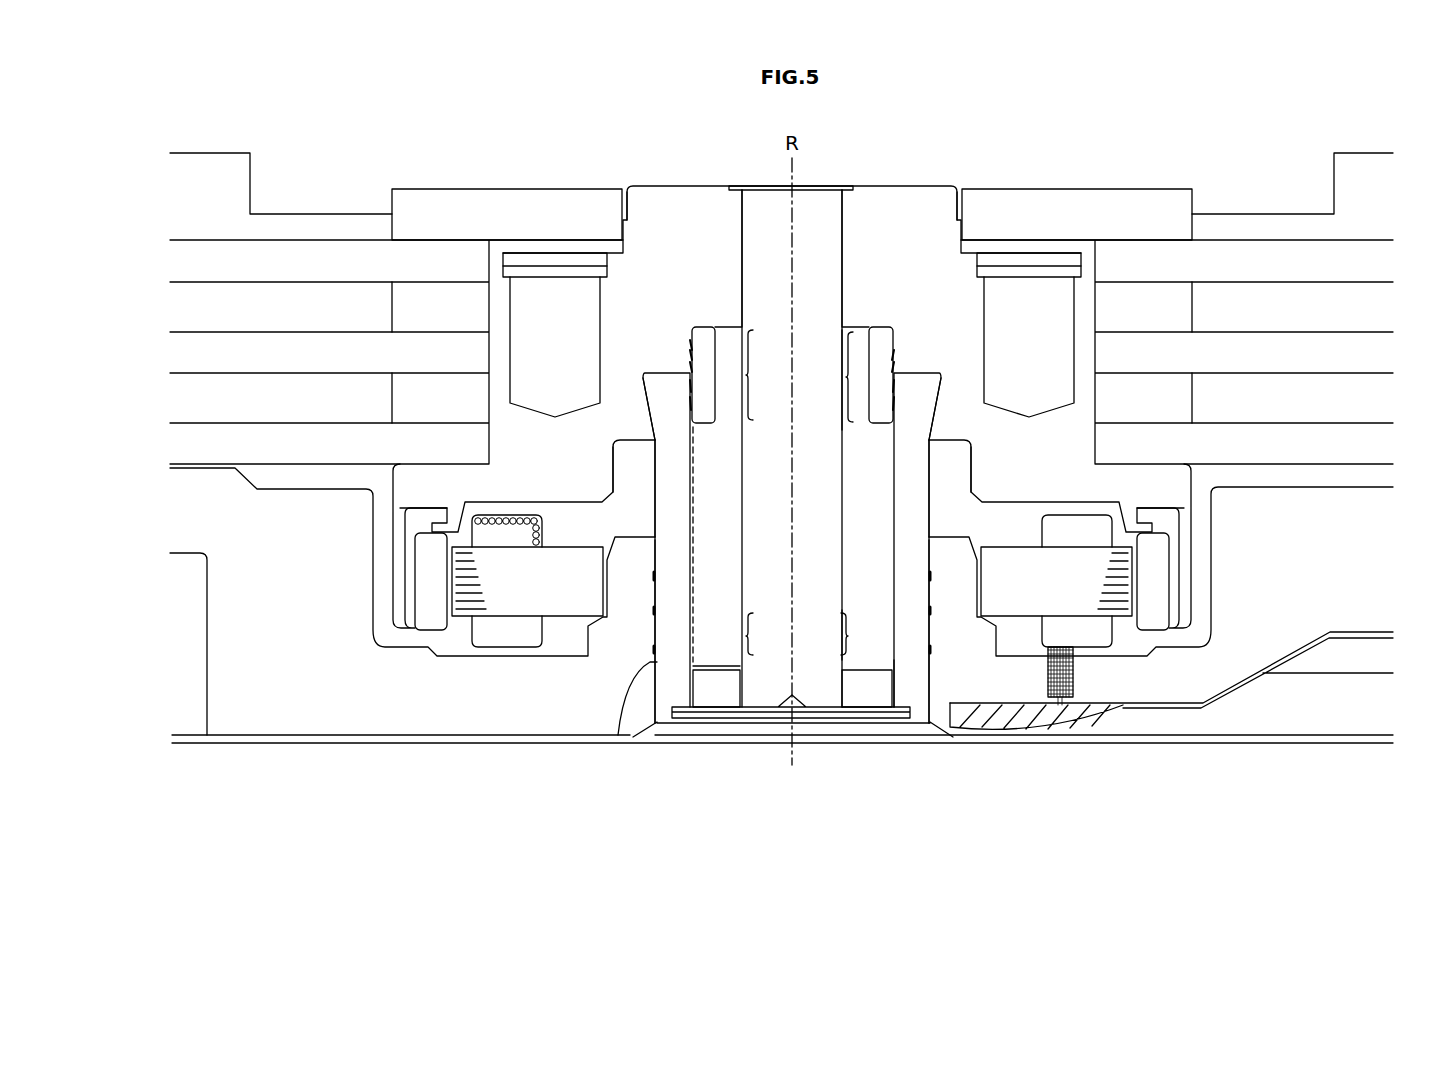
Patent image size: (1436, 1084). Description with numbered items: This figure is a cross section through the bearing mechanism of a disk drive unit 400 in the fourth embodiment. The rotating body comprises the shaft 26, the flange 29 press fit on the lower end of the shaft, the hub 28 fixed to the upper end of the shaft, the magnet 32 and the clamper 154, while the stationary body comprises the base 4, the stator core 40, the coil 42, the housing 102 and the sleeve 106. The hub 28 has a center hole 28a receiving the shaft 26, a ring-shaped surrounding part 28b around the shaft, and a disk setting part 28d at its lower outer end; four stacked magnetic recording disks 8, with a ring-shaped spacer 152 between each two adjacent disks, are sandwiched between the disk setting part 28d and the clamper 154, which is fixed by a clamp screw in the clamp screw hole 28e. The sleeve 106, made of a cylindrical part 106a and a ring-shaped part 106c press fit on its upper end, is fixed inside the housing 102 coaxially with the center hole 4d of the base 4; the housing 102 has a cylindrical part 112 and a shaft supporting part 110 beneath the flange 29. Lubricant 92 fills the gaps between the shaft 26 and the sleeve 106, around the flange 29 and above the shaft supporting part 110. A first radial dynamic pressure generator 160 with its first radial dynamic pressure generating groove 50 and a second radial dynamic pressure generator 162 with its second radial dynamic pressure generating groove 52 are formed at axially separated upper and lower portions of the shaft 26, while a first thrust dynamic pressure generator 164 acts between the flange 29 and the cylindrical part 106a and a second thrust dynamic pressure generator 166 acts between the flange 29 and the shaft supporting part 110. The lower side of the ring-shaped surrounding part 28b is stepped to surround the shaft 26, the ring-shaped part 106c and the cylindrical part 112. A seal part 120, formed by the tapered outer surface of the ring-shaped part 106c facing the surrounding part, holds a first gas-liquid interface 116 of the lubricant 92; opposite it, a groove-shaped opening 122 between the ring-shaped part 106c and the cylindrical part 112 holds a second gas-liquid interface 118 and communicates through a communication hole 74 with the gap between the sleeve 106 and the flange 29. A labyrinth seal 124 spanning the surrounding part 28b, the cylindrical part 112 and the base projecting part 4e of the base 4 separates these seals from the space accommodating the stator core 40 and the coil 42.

The disk drive unit 400 is at (238, 106).
The base 4 is at (204, 718).
The center hole 4d is at (622, 738).
The base projecting part 4e is at (626, 470).
The magnetic recording disk 8 is at (236, 240).
The shaft 26 is at (762, 195).
The hub 28 is at (690, 185).
The center hole 28a is at (846, 228).
The ring-shaped surrounding part 28b is at (645, 197).
The disk setting part 28d is at (402, 490).
The clamp screw hole 28e is at (558, 290).
The flange 29 is at (854, 697).
The magnet 32 is at (435, 615).
The stator core 40 is at (570, 593).
The coil 42 is at (495, 635).
The first radial dynamic pressure generating groove 50 is at (842, 378).
The second radial dynamic pressure generating groove 52 is at (842, 628).
The communication hole 74 is at (696, 524).
The lubricant 92 is at (690, 343).
The housing 102 is at (935, 800).
The sleeve 106 is at (895, 525).
The cylindrical part 106a is at (656, 612).
The ring-shaped part 106c is at (708, 330).
The shaft supporting part 110 is at (870, 713).
The cylindrical part 112 is at (915, 687).
The first gas-liquid interface 116 is at (690, 357).
The second gas-liquid interface 118 is at (690, 400).
The seal part 120 is at (690, 368).
The groove-shaped opening 122 is at (690, 385).
The labyrinth seal 124 is at (643, 427).
The spacer 152 is at (405, 304).
The clamper 154 is at (453, 197).
The first radial dynamic pressure generator 160 is at (862, 435).
The second radial dynamic pressure generator 162 is at (816, 634).
The first thrust dynamic pressure generator 164 is at (693, 668).
The second thrust dynamic pressure generator 166 is at (693, 704).